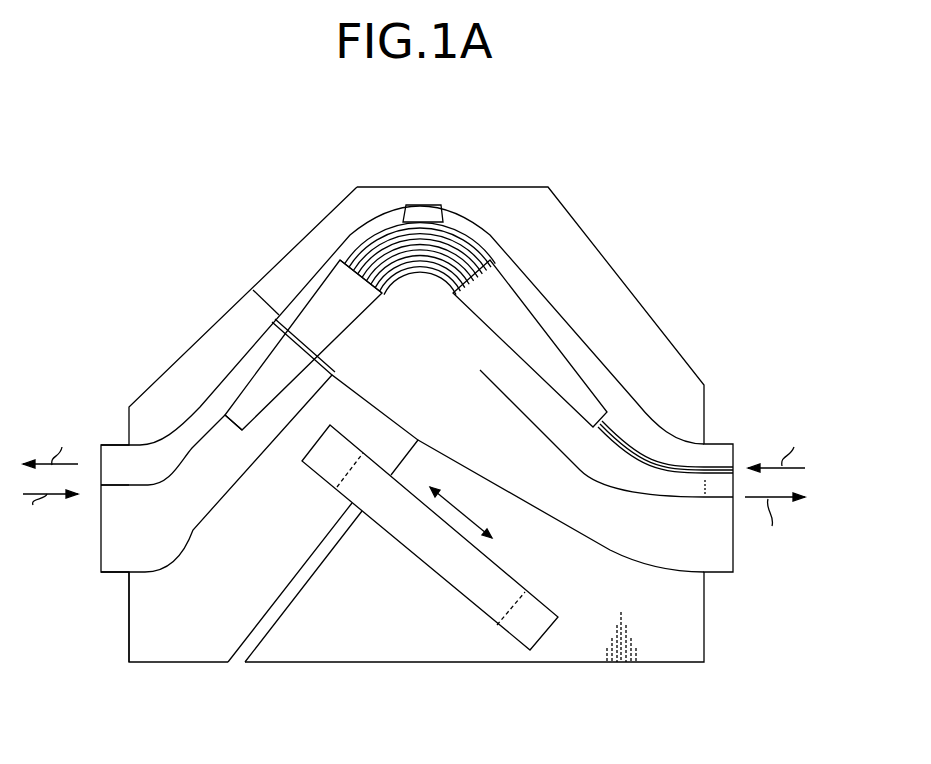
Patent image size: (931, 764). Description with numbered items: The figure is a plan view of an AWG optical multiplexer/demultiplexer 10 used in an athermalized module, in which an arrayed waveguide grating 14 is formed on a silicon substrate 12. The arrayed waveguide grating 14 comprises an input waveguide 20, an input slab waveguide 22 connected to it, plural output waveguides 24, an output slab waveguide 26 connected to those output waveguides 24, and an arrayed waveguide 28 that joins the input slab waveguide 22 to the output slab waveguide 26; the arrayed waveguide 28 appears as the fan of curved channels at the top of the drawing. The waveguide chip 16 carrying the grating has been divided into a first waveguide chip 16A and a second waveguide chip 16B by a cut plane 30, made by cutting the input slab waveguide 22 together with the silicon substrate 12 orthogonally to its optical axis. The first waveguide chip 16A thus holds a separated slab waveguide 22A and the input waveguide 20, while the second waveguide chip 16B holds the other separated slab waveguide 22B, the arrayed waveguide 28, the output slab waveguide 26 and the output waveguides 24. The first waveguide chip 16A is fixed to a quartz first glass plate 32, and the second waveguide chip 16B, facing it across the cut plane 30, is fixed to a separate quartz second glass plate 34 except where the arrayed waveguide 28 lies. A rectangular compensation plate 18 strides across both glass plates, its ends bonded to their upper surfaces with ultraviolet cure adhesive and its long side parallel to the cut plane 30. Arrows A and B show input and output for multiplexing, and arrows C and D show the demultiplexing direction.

The AWG optical multiplexer/demultiplexer 10 is at (700, 180).
The silicon substrate 12 is at (700, 378).
The arrayed waveguide grating 14 is at (440, 216).
The waveguide chip 16 is at (573, 257).
The first waveguide chip 16A is at (177, 413).
The second waveguide chip 16B is at (621, 361).
The compensation plate 18 is at (455, 600).
The input waveguide 20 is at (115, 487).
The input slab waveguide 22 is at (290, 300).
The separated slab waveguide 22A is at (270, 398).
The separated slab waveguide 22B is at (353, 330).
The output waveguides 24 is at (686, 468).
The output slab waveguide 26 is at (563, 345).
The arrayed waveguide 28 is at (403, 216).
The cut plane 30 is at (270, 318).
The first glass plate 32 is at (130, 628).
The second glass plate 34 is at (686, 634).